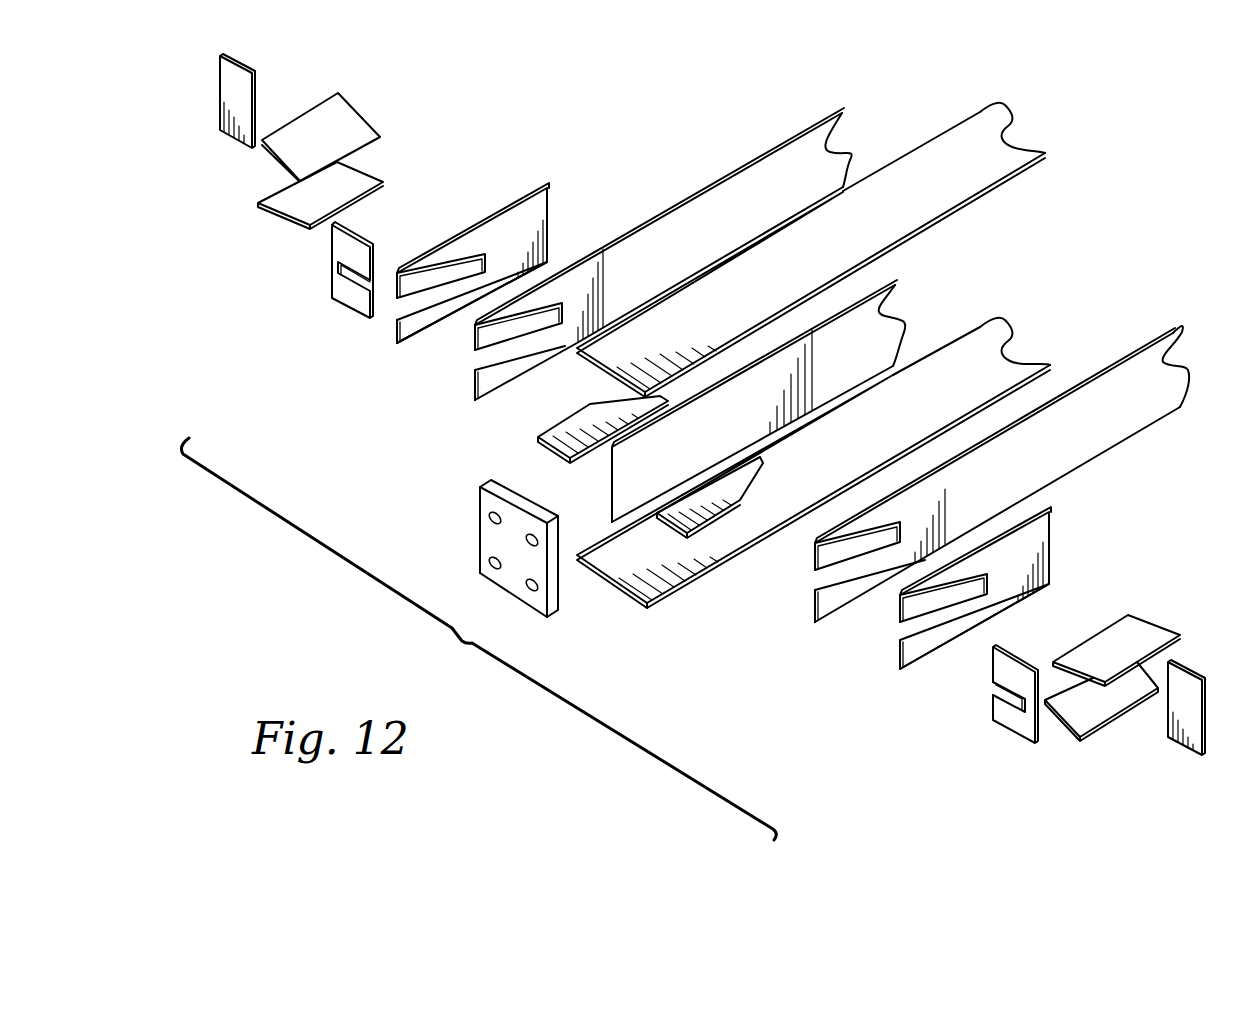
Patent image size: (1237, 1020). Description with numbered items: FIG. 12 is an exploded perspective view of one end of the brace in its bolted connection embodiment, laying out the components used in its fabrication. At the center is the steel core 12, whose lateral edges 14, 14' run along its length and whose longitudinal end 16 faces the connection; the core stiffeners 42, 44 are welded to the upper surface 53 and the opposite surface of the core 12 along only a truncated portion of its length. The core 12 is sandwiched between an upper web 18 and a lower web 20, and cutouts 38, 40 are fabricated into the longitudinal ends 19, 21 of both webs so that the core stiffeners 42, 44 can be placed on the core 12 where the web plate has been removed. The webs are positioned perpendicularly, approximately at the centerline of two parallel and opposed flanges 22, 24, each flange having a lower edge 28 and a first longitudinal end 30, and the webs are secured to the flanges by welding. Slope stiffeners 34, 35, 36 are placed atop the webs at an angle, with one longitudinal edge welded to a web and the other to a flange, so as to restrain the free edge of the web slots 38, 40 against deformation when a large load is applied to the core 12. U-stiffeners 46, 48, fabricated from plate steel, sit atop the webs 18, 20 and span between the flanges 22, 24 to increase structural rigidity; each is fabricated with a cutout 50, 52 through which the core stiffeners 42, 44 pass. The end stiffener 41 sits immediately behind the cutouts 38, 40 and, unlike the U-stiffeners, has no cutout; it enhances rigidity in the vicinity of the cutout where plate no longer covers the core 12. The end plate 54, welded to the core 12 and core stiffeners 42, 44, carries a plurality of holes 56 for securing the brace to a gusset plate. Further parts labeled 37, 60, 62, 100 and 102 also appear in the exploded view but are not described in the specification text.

The core 12 is at (739, 381).
The lateral edge of the core 14 is at (754, 344).
The lateral edge of the core 14' is at (779, 403).
The longitudinal end of the core 16 is at (612, 495).
The upper web 18 is at (968, 476).
The longitudinal end of the upper web 19 is at (813, 553).
The lower web 20 is at (626, 254).
The longitudinal end of the lower web 21 is at (476, 385).
The flange 22 is at (983, 140).
The flange 24 is at (1010, 310).
The lower edge of the flange 28 is at (813, 600).
The first longitudinal end of the flange 30 is at (590, 363).
The slope stiffener 34 is at (1050, 555).
The slope stiffener 35 is at (1137, 627).
The slope stiffener 36 is at (549, 225).
The top plate 37 is at (350, 117).
The cutout 38 is at (641, 443).
The cutout 40 is at (483, 358).
The end stiffener 41 is at (256, 98).
The core stiffener 42 is at (745, 480).
The core stiffener 44 is at (540, 434).
The U-stiffener 46 is at (979, 721).
The U-stiffener 48 is at (336, 269).
The cutout 50 is at (993, 686).
The cutout 52 is at (373, 278).
The upper surface of the core 53 is at (655, 465).
The end plate 54 is at (502, 566).
The holes 56 is at (530, 592).
The edge of mounting plate 60 is at (557, 590).
The face of mounting plate 62 is at (480, 550).
The lower strip 100 is at (900, 666).
The lower strip 102 is at (398, 340).